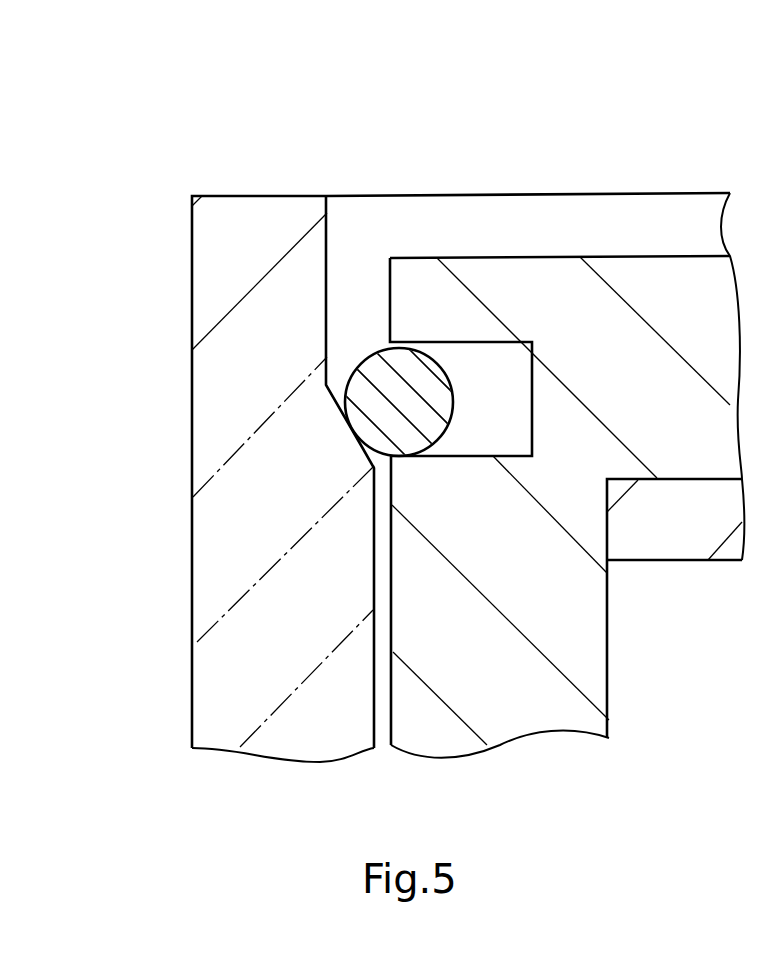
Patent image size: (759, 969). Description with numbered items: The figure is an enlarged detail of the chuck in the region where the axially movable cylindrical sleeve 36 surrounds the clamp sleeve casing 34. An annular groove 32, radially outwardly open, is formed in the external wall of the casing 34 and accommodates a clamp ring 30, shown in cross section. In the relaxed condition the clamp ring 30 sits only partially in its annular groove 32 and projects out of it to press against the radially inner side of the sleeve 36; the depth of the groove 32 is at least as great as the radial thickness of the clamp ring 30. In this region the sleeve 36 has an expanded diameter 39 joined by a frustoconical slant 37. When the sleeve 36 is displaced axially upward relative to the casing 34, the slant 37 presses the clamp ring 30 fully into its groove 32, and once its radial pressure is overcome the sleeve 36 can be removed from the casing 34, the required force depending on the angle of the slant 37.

The clamp ring 30 is at (397, 390).
The annular groove 32 is at (505, 380).
The clamp sleeve casing 34 is at (580, 630).
The cylindrical sleeve 36 is at (232, 693).
The frustoconical slant 37 is at (337, 387).
The expanded diameter 39 is at (328, 244).